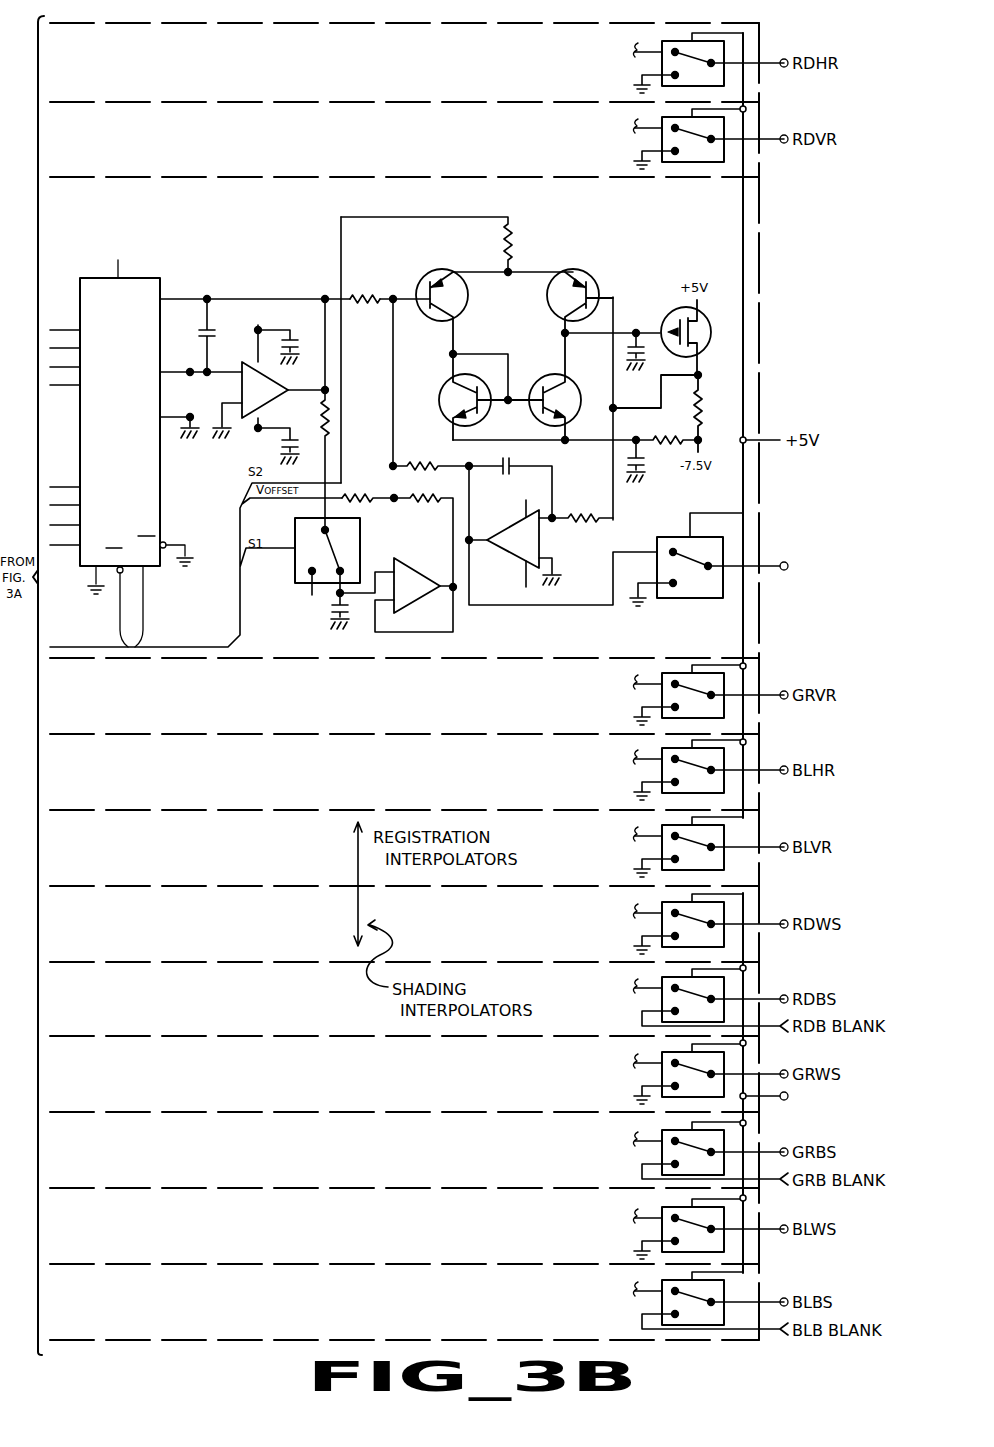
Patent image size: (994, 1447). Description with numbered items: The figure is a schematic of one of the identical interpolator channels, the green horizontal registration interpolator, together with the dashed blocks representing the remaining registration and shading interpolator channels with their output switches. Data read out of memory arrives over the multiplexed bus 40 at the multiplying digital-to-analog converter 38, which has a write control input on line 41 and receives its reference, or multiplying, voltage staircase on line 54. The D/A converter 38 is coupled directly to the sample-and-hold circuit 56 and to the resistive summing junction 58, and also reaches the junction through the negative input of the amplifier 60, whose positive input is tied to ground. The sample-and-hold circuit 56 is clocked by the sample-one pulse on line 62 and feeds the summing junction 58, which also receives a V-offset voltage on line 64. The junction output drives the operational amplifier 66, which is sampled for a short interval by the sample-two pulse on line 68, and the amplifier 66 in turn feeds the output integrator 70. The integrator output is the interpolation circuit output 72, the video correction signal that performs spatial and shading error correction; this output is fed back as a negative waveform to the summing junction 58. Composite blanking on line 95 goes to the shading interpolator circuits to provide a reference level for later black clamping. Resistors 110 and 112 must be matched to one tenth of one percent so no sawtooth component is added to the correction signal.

The multiplying digital-to-analog (D/A) converter 38 is at (147, 278).
The multiplexed bus 40 is at (66, 386).
The line (write control input) 41 is at (122, 634).
The line (reference voltage input) 54 is at (140, 634).
The sample-and-hold (S/H) circuit 56 is at (378, 568).
The resistive summing junction 58 is at (405, 462).
The amplifier 60 is at (241, 392).
The line (sample-1 pulse) 62 is at (265, 552).
The line (V-offset voltage) 64 is at (342, 496).
The operational amplifier 66 is at (549, 266).
The line (sample-2 pulse) 68 is at (432, 217).
The output integrator 70 is at (541, 540).
The output (of interpolation circuit) 72 is at (776, 563).
The composite blanking line 95 is at (774, 1100).
The resistor 110 is at (362, 305).
The resistor 112 is at (420, 497).